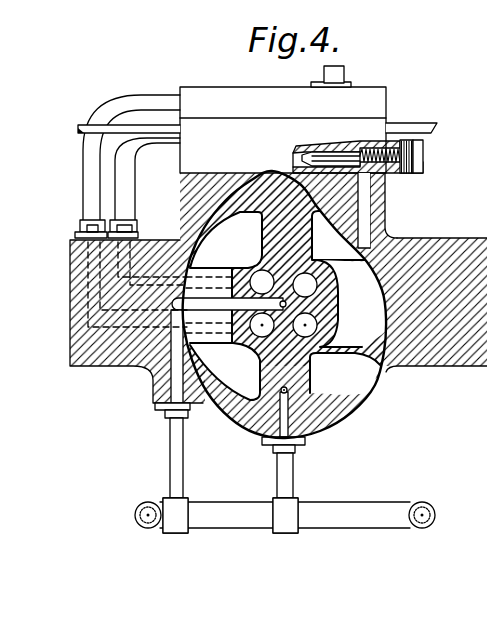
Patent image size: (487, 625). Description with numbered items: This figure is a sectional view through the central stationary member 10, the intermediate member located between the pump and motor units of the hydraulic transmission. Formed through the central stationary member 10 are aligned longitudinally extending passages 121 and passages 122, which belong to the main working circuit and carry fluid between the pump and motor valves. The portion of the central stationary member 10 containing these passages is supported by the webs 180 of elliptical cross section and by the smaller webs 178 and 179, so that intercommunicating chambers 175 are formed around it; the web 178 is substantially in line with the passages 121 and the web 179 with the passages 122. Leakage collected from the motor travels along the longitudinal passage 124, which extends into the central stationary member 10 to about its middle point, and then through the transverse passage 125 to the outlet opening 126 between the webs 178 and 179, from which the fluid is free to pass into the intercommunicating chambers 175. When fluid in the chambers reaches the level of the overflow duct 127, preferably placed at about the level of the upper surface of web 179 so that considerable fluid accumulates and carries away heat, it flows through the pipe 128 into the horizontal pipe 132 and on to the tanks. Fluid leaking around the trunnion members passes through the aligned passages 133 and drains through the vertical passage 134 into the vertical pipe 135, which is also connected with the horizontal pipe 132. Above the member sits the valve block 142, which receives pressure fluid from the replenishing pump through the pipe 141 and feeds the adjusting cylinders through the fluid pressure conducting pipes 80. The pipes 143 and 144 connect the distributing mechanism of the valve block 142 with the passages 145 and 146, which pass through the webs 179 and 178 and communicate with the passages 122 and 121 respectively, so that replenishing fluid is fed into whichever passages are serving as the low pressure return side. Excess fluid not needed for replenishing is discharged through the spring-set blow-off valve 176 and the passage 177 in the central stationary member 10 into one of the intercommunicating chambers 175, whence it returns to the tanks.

The central stationary member 10 is at (427, 235).
The fluid pressure conducting pipes 80 is at (88, 126).
The longitudinally extending passages 121 is at (285, 236).
The longitudinally extending passages 122 is at (308, 330).
The longitudinal passage 124 is at (286, 305).
The transverse passage 125 is at (298, 291).
The outlet opening 126 is at (132, 365).
The overflow duct 127 is at (172, 375).
The pipe 128 is at (175, 453).
The horizontal pipe 132 is at (388, 486).
The aligned passages 133 is at (288, 390).
The vertical passage 134 is at (288, 416).
The vertical pipe 135 is at (293, 471).
The pipe 141 is at (337, 73).
The valve block 142 is at (199, 148).
The pipe 143 is at (147, 84).
The pipe 144 is at (128, 157).
The passage 145 is at (80, 293).
The passage 146 is at (88, 262).
The intercommunicating chambers 175 is at (252, 211).
The blow-off valve 176 is at (416, 152).
The passage 177 is at (373, 198).
The web 178 is at (217, 275).
The web 179 is at (208, 338).
The webs 180 is at (352, 229).